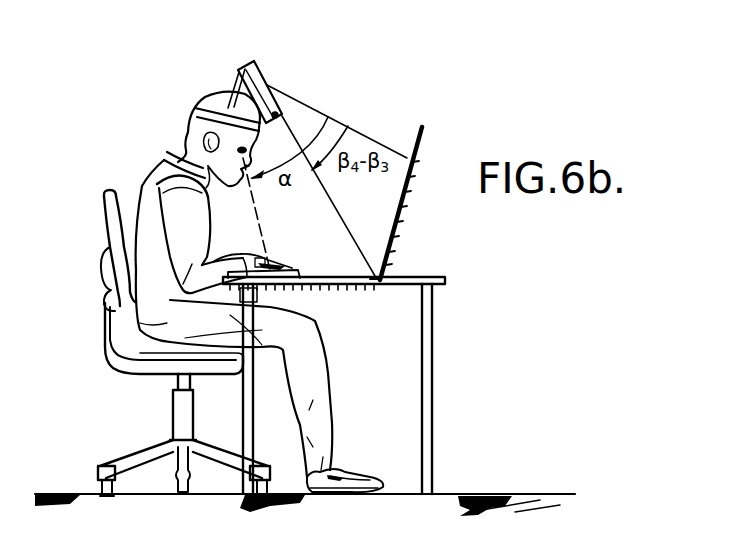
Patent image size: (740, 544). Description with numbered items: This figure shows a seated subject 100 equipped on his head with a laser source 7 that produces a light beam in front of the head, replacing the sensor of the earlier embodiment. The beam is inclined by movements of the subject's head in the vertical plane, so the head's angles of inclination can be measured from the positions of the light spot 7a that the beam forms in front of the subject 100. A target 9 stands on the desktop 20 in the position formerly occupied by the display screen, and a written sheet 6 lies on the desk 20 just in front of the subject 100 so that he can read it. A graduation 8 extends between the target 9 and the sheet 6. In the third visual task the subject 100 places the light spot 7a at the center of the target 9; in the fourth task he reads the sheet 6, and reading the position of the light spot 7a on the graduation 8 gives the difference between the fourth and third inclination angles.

The subject 100 is at (144, 194).
The laser source 7 is at (250, 72).
The light spot 7a is at (375, 277).
The target 9 is at (425, 137).
The graduation 8 is at (353, 270).
The written sheet 6 is at (285, 286).
The desktop 20 is at (408, 287).